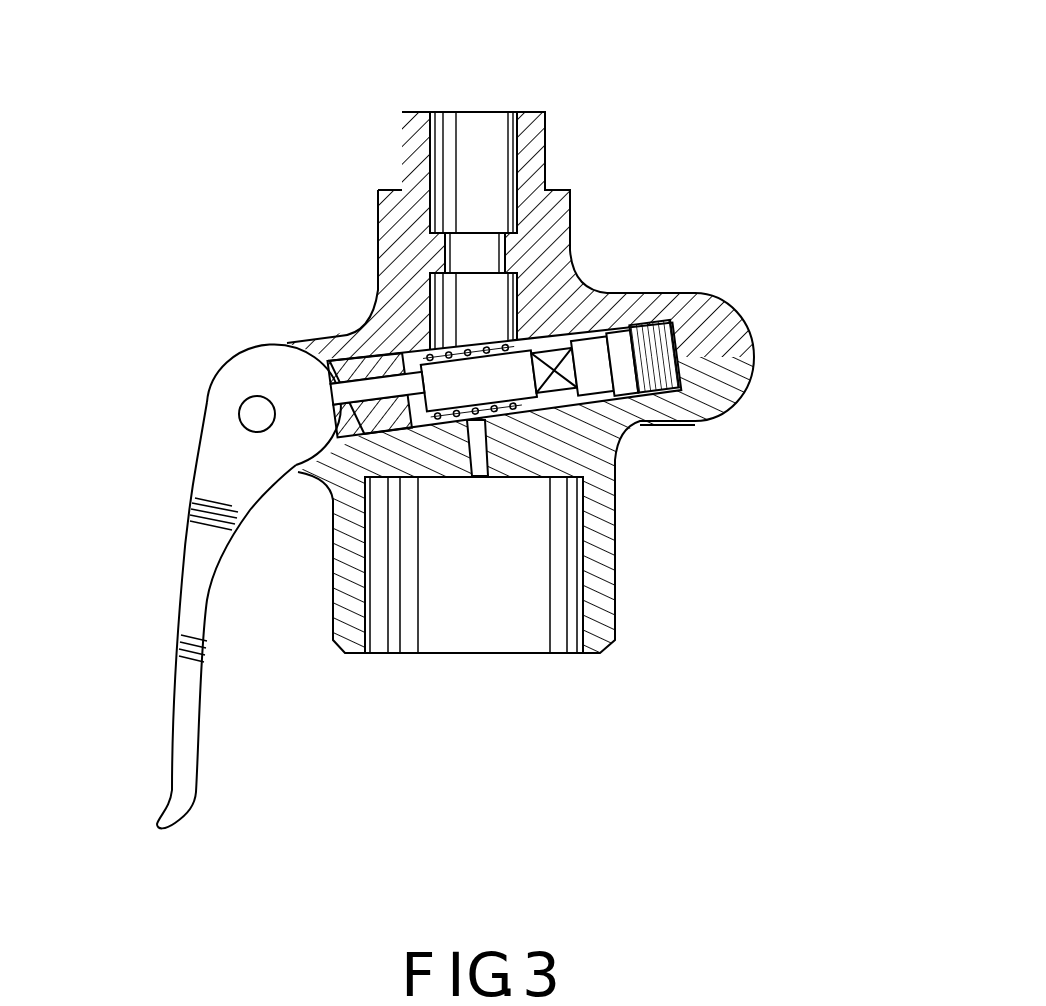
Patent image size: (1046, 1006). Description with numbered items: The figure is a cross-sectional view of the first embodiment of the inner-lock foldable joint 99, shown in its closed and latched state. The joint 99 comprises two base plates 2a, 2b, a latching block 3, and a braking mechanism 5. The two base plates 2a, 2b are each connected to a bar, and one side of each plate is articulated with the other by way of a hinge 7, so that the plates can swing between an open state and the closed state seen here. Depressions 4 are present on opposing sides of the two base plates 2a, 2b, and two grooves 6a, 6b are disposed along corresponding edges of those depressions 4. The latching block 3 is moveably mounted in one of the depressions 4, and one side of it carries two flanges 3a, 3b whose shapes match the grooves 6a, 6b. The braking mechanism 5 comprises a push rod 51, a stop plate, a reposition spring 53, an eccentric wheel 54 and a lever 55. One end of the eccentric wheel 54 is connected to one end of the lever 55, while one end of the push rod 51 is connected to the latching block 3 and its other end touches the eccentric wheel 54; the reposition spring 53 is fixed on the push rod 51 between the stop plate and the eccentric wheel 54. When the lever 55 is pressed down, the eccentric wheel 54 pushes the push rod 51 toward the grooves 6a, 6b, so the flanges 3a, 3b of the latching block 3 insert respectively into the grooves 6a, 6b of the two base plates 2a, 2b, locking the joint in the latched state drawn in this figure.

The inner-lock foldable joint 99 is at (456, 420).
The braking mechanism 5 is at (238, 524).
The reposition spring 53 is at (420, 343).
The eccentric wheel 54 is at (253, 378).
The hinge 7 is at (262, 410).
The lever 55 is at (200, 547).
The push rod 51 is at (473, 381).
The latching block 3 is at (499, 378).
The flange 3a is at (622, 363).
The flange 3b is at (592, 365).
The base plate 2a is at (697, 293).
The base plate 2b is at (703, 410).
The groove 6a is at (651, 339).
The groove 6b is at (656, 373).
The valve stem 4 is at (611, 398).